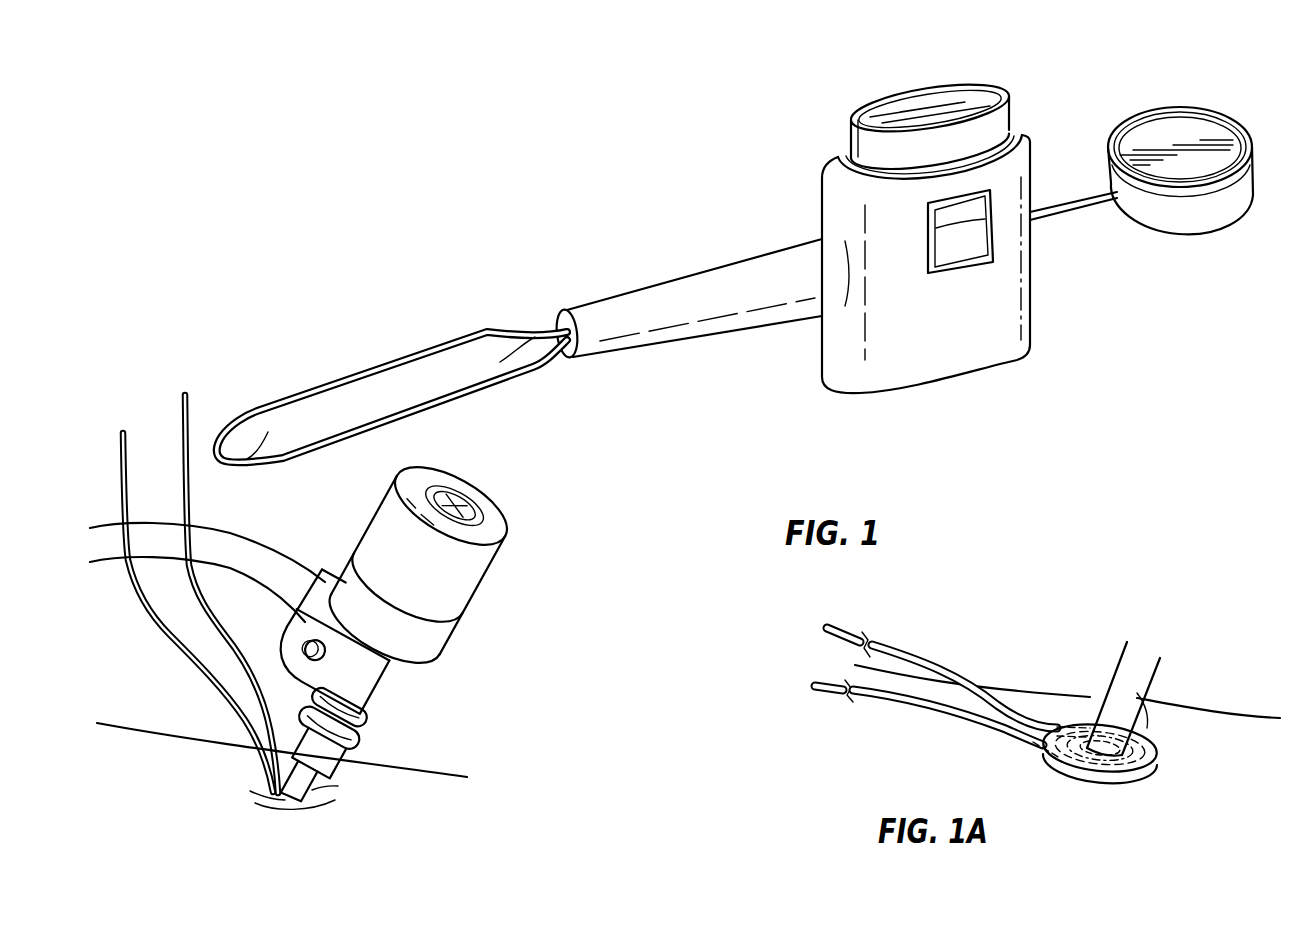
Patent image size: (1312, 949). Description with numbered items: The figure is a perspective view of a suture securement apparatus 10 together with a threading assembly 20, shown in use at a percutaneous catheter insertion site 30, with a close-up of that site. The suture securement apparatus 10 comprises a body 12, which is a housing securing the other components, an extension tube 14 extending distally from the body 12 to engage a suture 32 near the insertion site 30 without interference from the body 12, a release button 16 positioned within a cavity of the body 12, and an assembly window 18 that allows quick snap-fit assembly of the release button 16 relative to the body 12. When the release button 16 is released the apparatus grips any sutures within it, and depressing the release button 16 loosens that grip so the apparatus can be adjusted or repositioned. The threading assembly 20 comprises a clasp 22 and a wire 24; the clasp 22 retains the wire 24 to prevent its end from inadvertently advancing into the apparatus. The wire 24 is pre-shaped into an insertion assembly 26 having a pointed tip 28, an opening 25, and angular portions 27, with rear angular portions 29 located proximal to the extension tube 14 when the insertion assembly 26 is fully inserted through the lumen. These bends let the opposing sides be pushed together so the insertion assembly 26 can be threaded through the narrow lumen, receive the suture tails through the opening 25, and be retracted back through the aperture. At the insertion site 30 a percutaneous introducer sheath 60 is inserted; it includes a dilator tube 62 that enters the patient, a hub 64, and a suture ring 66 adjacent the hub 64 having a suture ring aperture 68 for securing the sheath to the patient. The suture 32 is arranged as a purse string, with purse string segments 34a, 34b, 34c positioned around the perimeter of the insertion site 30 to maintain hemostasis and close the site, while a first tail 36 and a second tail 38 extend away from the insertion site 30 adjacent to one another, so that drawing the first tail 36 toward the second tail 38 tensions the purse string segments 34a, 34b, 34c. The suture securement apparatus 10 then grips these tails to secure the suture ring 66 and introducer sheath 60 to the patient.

In FIG. 1, the suture securement apparatus 10 is at (798, 195).
In FIG. 1, the body 12 is at (1002, 285).
In FIG. 1, the extension tube 14 is at (717, 273).
In FIG. 1, the release button 16 is at (852, 137).
In FIG. 1, the assembly window 18 is at (950, 243).
In FIG. 1, the threading assembly 20 is at (1106, 116).
In FIG. 1, the clasp 22 is at (1168, 123).
In FIG. 1, the wire 24 is at (1073, 210).
In FIG. 1, the opening 25 is at (406, 385).
In FIG. 1, the insertion assembly 26 is at (363, 328).
In FIG. 1, the angular portions 27 is at (243, 423).
In FIG. 1, the pointed tip 28 is at (212, 452).
In FIG. 1, the rear angular portions 29 is at (530, 360).
In FIG. 1, the percutaneous catheter insertion site 30 is at (259, 819).
In FIG. 1A, the percutaneous catheter insertion site 30 is at (1119, 795).
In FIG. 1, the suture 32 is at (138, 597).
In FIG. 1A, the suture 32 is at (993, 705).
In FIG. 1A, the purse string segment 34a is at (1073, 773).
In FIG. 1A, the purse string segment 34b is at (1147, 767).
In FIG. 1A, the purse string segment 34c is at (1147, 728).
In FIG. 1, the first tail 36 is at (190, 513).
In FIG. 1A, the first tail 36 is at (953, 672).
In FIG. 1, the second tail 38 is at (119, 497).
In FIG. 1A, the second tail 38 is at (910, 707).
In FIG. 1, the percutaneous introducer sheath 60 is at (383, 632).
In FIG. 1, the dilator tube 62 is at (333, 785).
In FIG. 1A, the dilator tube 62 is at (1135, 690).
In FIG. 1, the hub 64 is at (467, 597).
In FIG. 1, the suture ring 66 is at (298, 650).
In FIG. 1, the suture ring aperture 68 is at (302, 657).